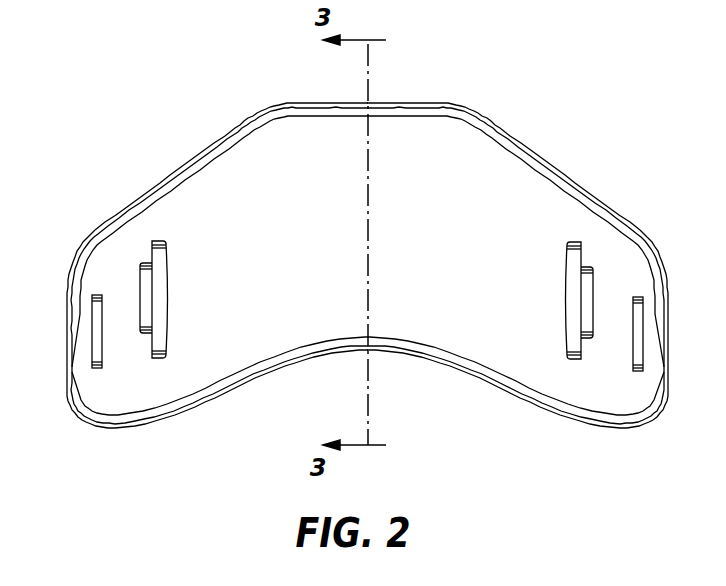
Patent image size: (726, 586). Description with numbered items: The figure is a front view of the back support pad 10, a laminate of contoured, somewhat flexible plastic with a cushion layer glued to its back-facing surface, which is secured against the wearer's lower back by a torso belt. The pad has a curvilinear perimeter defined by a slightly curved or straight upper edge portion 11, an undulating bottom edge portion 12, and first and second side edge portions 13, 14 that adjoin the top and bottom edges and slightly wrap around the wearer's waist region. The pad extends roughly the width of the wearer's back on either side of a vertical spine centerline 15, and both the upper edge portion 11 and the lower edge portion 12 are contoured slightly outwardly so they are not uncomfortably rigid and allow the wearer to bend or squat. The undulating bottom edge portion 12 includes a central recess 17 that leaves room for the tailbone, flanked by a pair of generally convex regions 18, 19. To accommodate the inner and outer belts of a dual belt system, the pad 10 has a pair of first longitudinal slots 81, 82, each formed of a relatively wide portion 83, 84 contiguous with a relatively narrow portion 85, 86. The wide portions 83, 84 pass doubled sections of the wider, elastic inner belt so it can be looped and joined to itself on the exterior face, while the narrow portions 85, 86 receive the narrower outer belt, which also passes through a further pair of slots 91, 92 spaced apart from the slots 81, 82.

The back support pad 10 is at (528, 131).
The upper edge portion 11 is at (432, 112).
The bottom edge portion 12 is at (420, 368).
The first side edge portion 13 is at (64, 345).
The second side edge portion 14 is at (669, 358).
The spine centerline 15 is at (370, 226).
The recess 17 is at (306, 366).
The convex region 18 is at (147, 426).
The convex region 19 is at (566, 422).
The first longitudinal slot 81 is at (166, 252).
The first longitudinal slot 82 is at (572, 254).
The relatively wide portion 83 is at (164, 350).
The relatively wide portion 84 is at (576, 352).
The relatively narrow portion 85 is at (144, 305).
The relatively narrow portion 86 is at (590, 304).
The further slot 91 is at (103, 306).
The further slot 92 is at (638, 299).